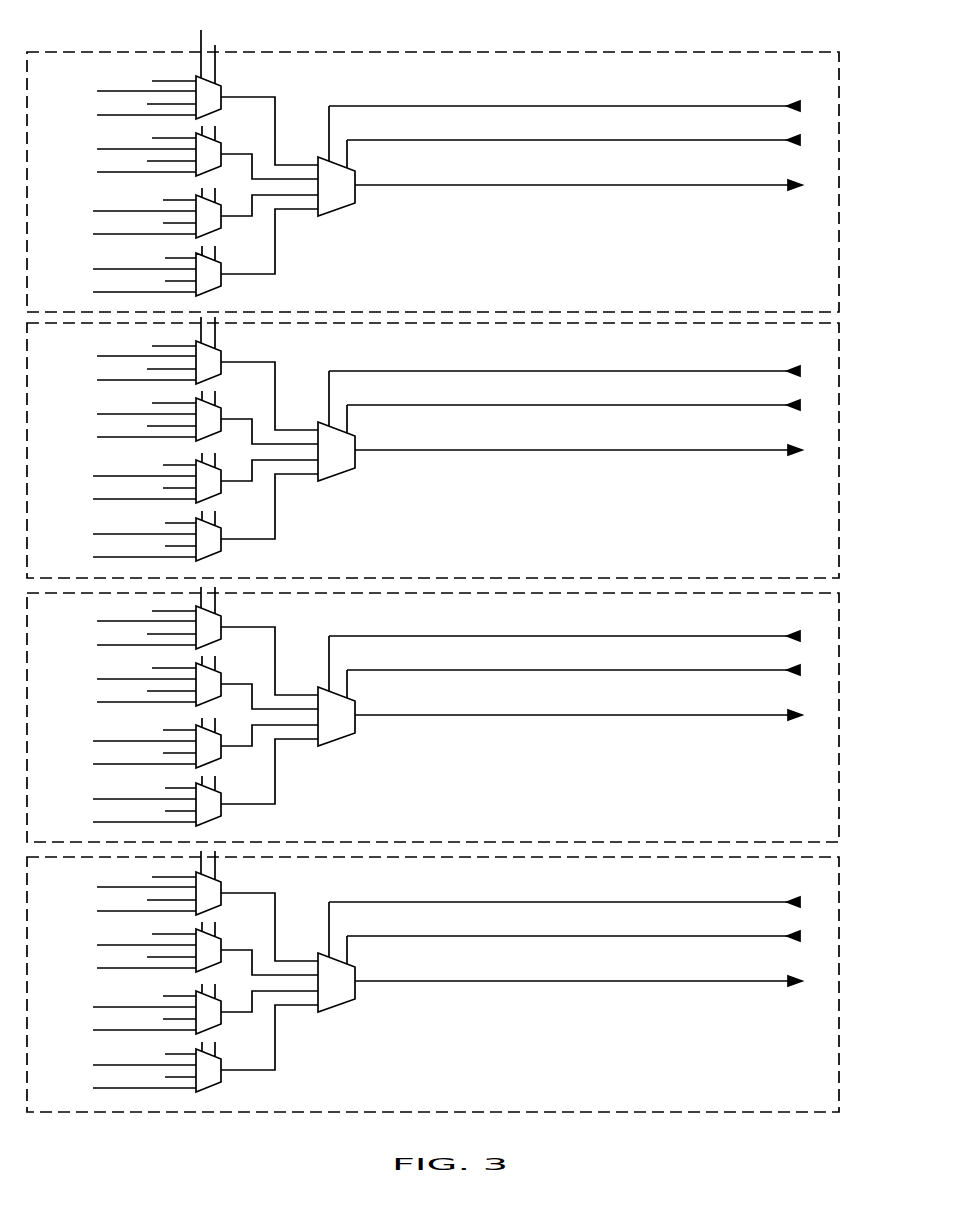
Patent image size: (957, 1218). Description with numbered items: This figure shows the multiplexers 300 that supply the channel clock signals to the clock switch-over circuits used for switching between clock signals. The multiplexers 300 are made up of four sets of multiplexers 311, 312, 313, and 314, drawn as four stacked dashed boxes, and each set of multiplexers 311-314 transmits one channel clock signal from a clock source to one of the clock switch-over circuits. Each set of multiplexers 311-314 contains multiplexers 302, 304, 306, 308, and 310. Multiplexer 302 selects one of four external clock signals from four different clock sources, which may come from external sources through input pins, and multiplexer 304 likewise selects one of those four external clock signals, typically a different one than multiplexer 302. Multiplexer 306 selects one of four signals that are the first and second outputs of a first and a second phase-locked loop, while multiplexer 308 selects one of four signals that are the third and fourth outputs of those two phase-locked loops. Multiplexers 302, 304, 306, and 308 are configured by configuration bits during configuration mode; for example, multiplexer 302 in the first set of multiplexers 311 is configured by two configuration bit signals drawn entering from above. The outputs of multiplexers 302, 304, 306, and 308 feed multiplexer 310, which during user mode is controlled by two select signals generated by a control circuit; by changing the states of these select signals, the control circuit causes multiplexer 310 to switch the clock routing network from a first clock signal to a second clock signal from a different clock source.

The multiplexers 300 is at (453, 36).
The multiplexer 302 is at (222, 95).
The multiplexer 304 is at (222, 152).
The multiplexer 306 is at (222, 228).
The multiplexer 308 is at (223, 282).
The multiplexer 310 is at (343, 205).
The set of multiplexers 311 is at (805, 52).
The set of multiplexers 312 is at (840, 338).
The set of multiplexers 313 is at (840, 606).
The set of multiplexers 314 is at (840, 882).